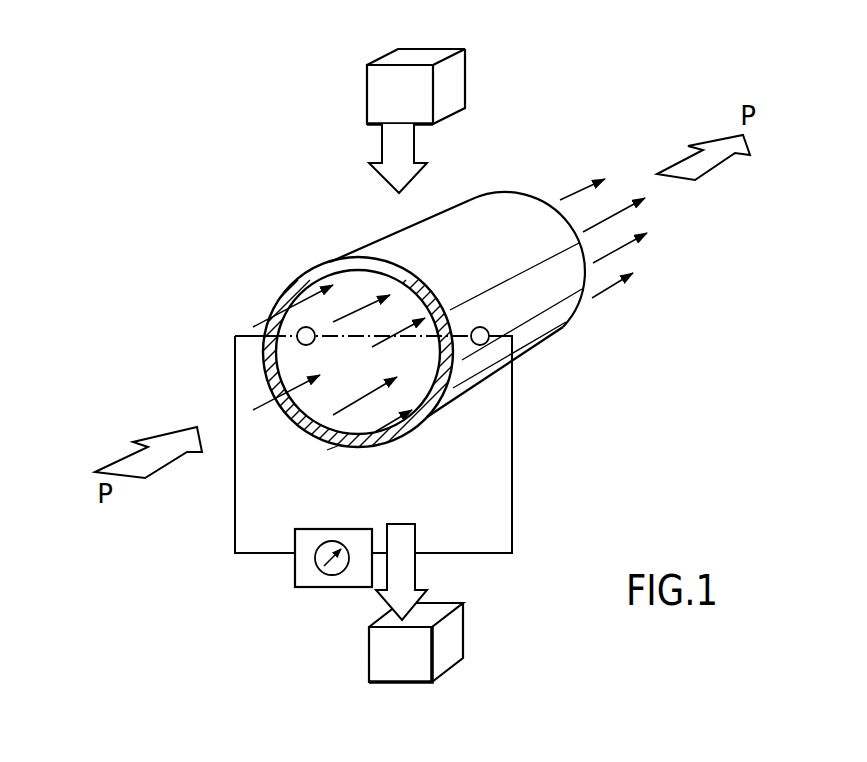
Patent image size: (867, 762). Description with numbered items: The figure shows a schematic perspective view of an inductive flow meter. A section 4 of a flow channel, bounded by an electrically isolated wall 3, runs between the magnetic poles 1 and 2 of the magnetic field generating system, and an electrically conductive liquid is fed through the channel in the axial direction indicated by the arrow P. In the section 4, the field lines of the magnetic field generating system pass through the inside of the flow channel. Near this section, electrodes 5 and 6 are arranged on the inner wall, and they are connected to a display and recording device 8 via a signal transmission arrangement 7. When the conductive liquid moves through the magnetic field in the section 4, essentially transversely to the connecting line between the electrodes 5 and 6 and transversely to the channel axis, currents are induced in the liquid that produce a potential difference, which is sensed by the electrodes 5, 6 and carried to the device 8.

The magnetic pole 1 is at (457, 83).
The magnetic pole 2 is at (453, 635).
The electrically isolated wall 3 is at (572, 317).
The section of a flow channel 4 is at (532, 358).
The electrode 5 is at (480, 327).
The electrode 6 is at (305, 327).
The signal transmission arrangement 7 is at (232, 515).
The display and recording device 8 is at (293, 573).